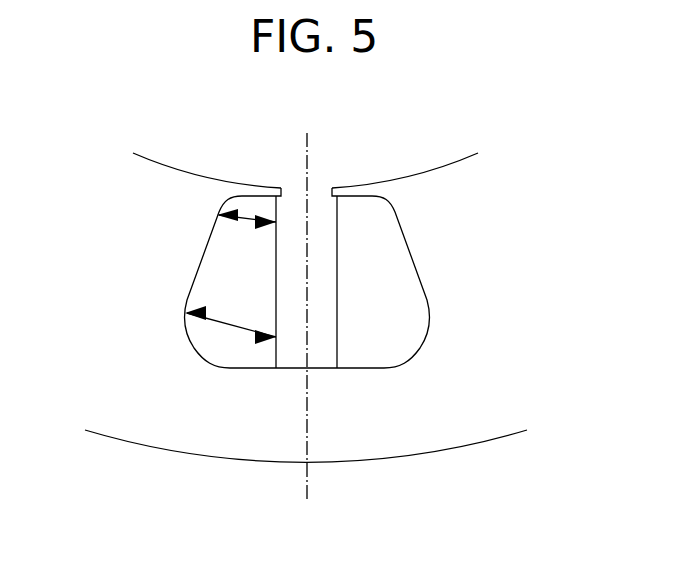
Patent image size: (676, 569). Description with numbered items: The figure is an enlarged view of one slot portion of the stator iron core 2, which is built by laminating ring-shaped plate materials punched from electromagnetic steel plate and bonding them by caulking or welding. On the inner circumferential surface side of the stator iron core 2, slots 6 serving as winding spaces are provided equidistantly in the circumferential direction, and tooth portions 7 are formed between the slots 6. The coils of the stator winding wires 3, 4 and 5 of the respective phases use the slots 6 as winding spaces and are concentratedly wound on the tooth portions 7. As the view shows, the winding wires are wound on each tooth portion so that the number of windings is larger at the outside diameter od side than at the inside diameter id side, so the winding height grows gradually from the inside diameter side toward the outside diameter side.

The stator iron core 2 is at (227, 443).
The stator winding wire 3 is at (171, 274).
The stator winding wire 4 is at (171, 274).
The stator winding wire 5 is at (171, 274).
The slot 6 is at (368, 218).
The tooth portion 7 is at (155, 190).
The inside diameter side id is at (247, 222).
The outside diameter side od is at (223, 323).